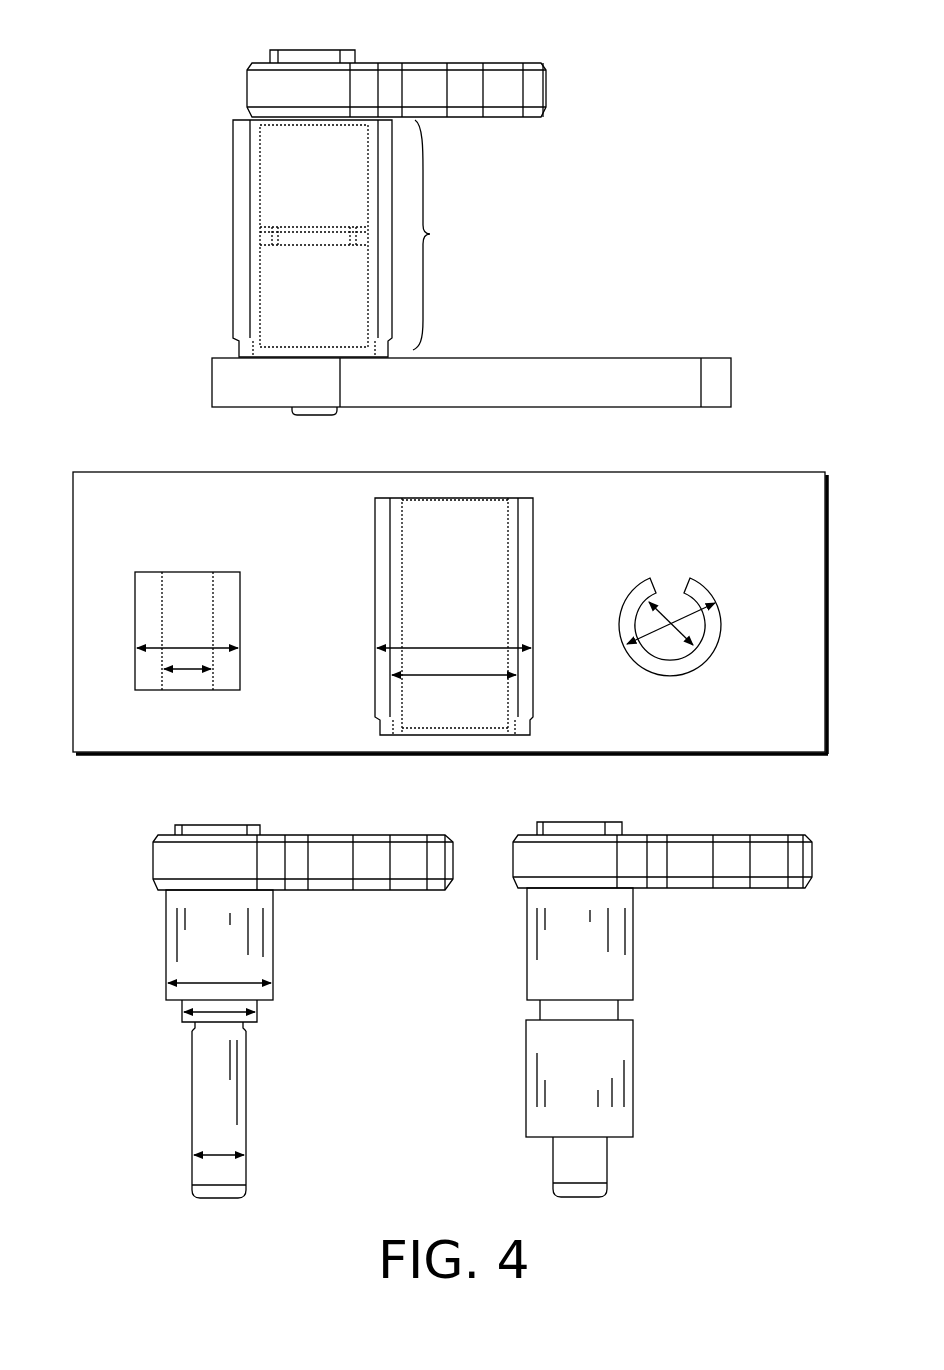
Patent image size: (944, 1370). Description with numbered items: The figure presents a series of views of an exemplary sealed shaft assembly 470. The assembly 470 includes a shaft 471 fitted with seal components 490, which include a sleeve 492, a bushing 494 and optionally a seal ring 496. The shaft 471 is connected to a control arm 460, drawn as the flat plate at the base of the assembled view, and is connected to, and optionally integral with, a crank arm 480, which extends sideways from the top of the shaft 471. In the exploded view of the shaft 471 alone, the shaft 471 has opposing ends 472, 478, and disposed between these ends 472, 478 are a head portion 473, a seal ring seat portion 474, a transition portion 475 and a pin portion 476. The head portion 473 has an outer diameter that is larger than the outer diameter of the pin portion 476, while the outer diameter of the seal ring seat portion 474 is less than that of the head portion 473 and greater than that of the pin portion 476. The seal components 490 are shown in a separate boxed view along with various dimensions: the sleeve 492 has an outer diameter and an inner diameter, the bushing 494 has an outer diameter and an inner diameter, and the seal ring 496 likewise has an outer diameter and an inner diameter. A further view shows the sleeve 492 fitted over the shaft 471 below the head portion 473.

The control arm 460 is at (450, 407).
The sealed shaft assembly 470 is at (210, 42).
The shaft 471 is at (417, 815).
The end 472 is at (238, 825).
The head portion 473 is at (273, 942).
The seal ring seat portion 474 is at (257, 1010).
The transition portion 475 is at (243, 1025).
The pin portion 476 is at (246, 1107).
The end 478 is at (246, 1190).
The crank arm 480 is at (468, 63).
The seal components 490 is at (318, 511).
The sleeve 492 is at (240, 625).
The bushing 494 is at (533, 570).
The seal ring 496 is at (710, 583).